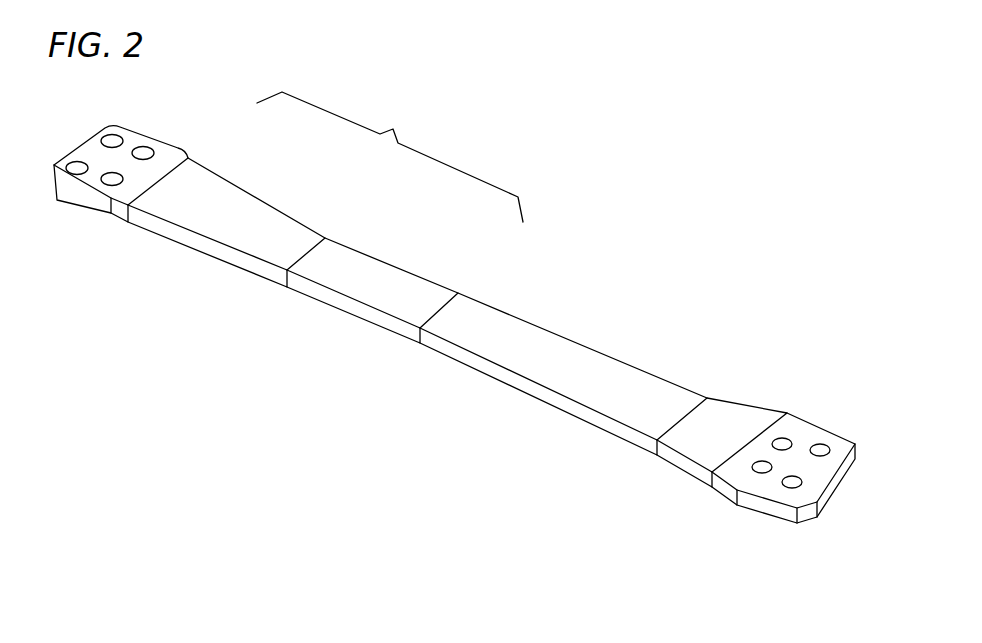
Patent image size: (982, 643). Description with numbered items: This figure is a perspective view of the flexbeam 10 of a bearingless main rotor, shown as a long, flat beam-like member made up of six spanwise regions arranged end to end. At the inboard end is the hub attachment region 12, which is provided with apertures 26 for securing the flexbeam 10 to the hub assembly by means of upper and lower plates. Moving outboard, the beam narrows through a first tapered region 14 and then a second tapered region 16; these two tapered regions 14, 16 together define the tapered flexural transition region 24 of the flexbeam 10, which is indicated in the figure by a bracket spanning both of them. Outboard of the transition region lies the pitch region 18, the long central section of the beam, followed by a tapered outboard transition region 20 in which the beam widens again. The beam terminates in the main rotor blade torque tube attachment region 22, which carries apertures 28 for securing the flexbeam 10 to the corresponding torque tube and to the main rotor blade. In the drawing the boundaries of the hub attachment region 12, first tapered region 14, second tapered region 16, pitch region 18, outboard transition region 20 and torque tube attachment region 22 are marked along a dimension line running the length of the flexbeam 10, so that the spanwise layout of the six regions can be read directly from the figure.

The flexbeam 10 is at (348, 369).
The hub attachment region 12 is at (133, 161).
The first tapered region 14 is at (212, 136).
The second tapered region 16 is at (192, 154).
The pitch region 18 is at (466, 285).
The tapered outboard transition region 20 is at (713, 390).
The torque tube attachment region 22 is at (793, 459).
The tapered flexural transition region 24 is at (390, 157).
The apertures 26 is at (86, 168).
The apertures 28 is at (792, 484).